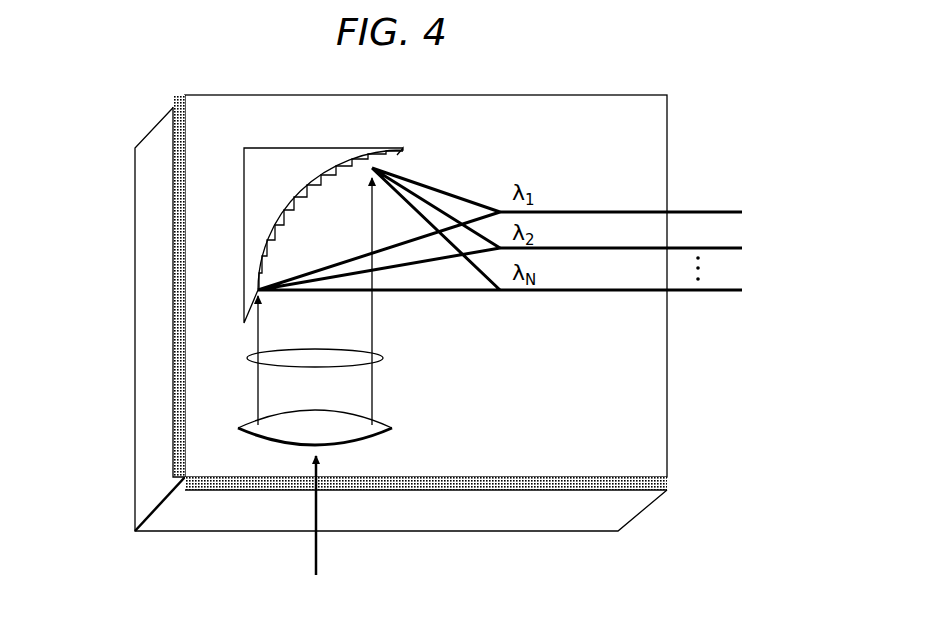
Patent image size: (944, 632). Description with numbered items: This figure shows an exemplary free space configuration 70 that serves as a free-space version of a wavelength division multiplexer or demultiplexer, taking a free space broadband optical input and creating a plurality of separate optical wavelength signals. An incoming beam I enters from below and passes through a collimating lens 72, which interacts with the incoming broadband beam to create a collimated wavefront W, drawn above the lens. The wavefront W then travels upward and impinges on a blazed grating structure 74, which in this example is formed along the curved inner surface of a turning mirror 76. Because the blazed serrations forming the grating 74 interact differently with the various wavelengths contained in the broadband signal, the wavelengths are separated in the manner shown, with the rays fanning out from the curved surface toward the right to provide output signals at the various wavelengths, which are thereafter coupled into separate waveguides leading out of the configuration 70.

The free space configuration 70 is at (112, 112).
The collimating lens 72 is at (392, 428).
The blazed grating structure 74 is at (310, 204).
The turning mirror 76 is at (287, 153).
The collimated wavefront W is at (383, 358).
The input light I is at (318, 558).